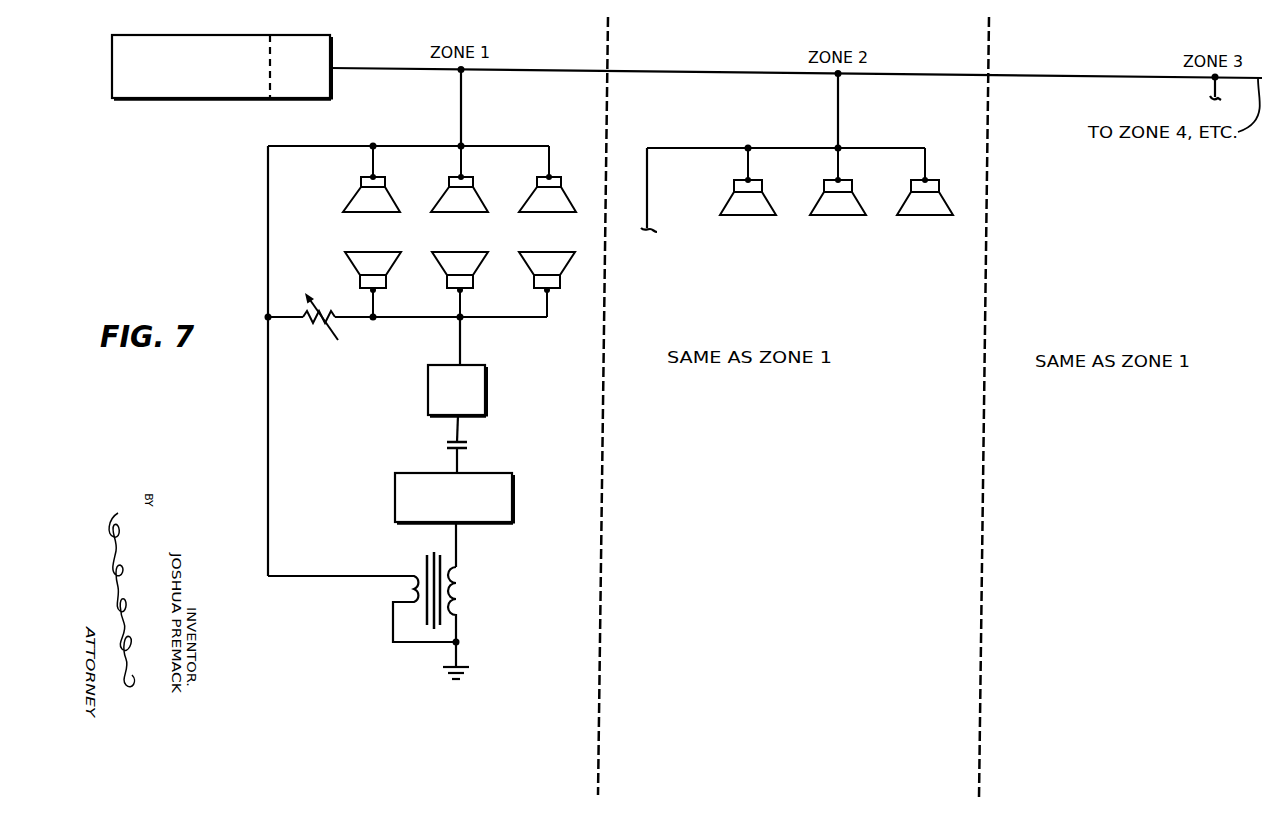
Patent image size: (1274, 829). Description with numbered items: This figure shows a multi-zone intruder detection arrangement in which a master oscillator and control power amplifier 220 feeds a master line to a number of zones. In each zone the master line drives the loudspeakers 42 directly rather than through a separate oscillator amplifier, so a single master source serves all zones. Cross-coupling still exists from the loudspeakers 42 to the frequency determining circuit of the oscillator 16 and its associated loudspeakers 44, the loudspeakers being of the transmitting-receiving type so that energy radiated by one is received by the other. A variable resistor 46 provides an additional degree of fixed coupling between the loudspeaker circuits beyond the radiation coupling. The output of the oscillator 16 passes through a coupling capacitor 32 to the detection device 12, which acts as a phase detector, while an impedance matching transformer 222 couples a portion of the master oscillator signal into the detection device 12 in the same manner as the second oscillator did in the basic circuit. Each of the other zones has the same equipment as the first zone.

The master oscillator and control power amplifier 220 is at (293, 100).
The loudspeaker 42 is at (450, 212).
The loudspeaker 44 is at (470, 252).
The variable resistor 46 is at (312, 320).
The oscillator 16 is at (488, 384).
The coupling capacitor 32 is at (468, 442).
The detection device 12 is at (515, 489).
The impedance matching transformer 222 is at (461, 593).